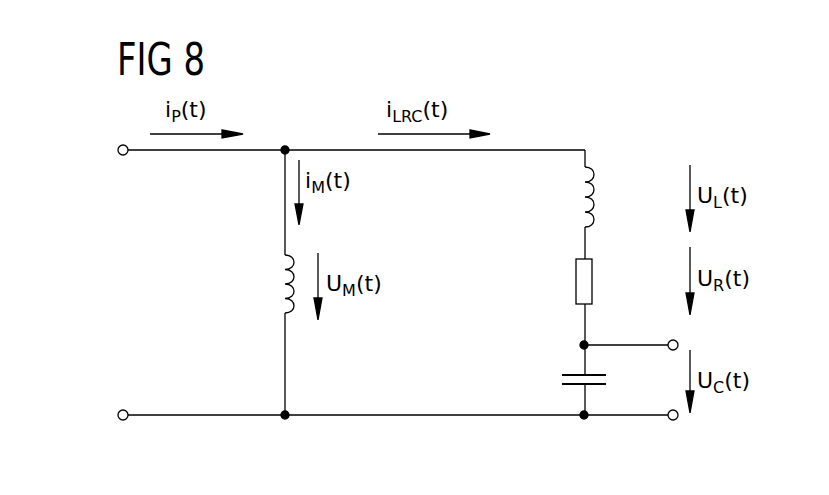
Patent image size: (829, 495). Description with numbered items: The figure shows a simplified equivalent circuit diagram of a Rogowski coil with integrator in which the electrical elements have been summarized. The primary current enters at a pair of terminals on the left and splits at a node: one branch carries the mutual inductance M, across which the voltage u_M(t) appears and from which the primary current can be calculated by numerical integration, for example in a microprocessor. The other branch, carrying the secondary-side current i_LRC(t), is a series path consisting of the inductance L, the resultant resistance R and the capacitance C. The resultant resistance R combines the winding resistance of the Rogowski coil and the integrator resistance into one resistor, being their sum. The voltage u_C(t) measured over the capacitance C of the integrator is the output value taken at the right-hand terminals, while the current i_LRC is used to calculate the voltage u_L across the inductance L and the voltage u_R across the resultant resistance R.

The mutual inductance M is at (283, 277).
The inductance L is at (583, 186).
The resultant resistance R is at (574, 280).
The capacitance C is at (560, 380).